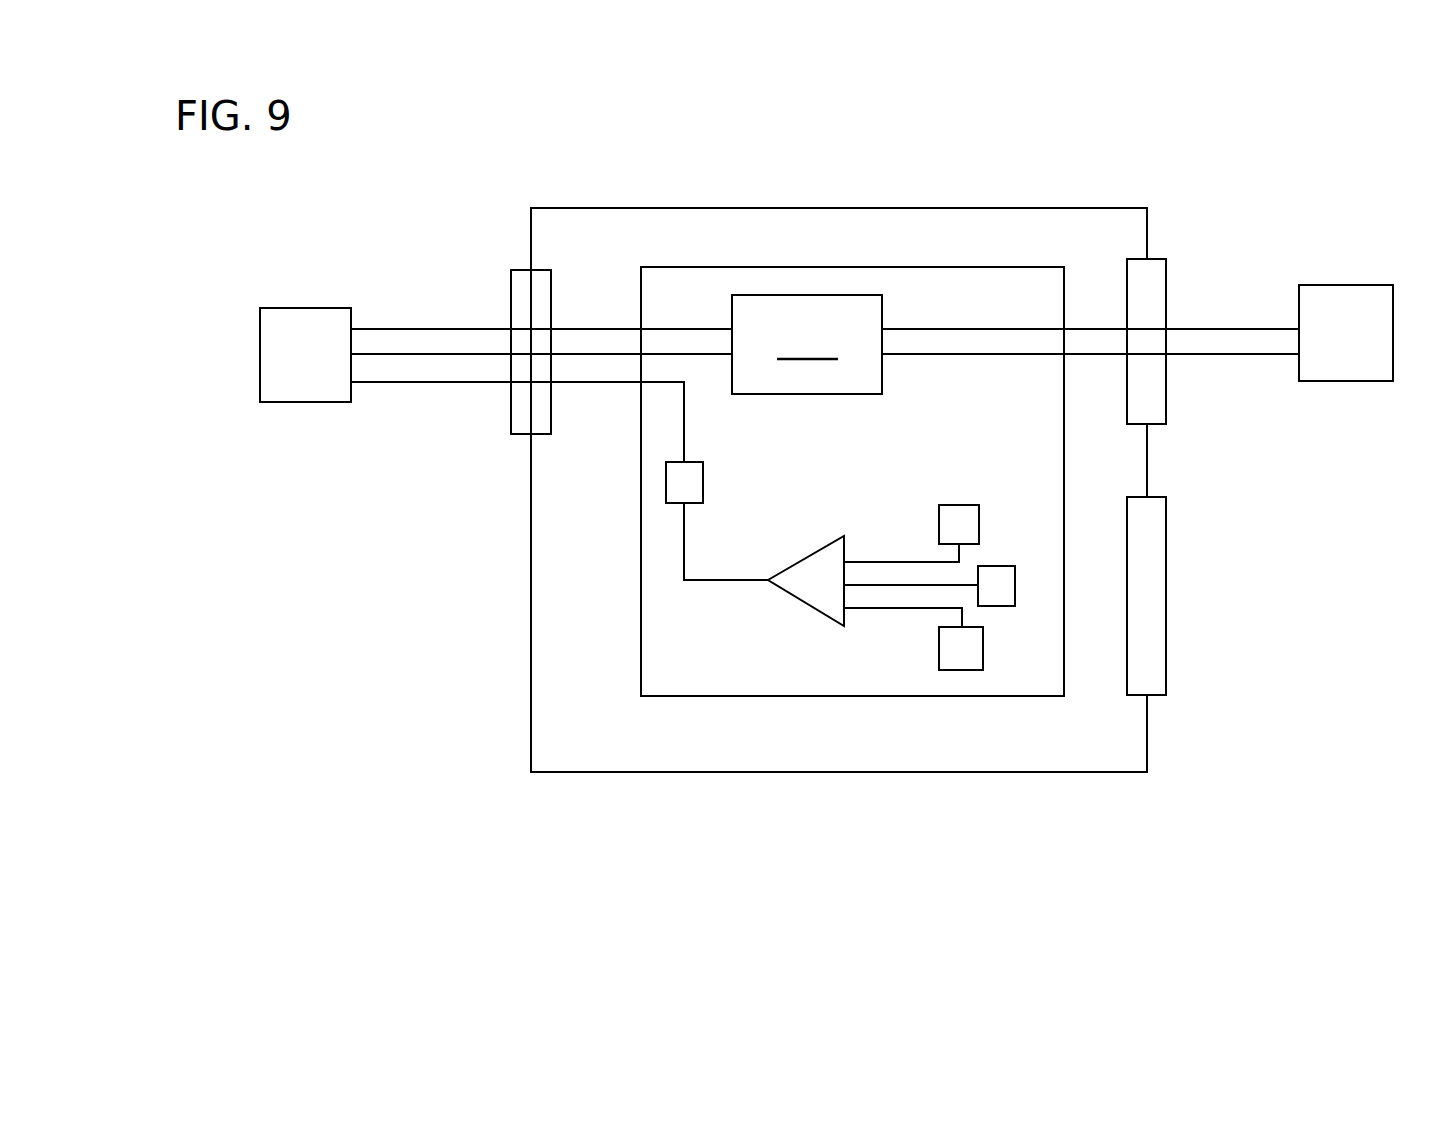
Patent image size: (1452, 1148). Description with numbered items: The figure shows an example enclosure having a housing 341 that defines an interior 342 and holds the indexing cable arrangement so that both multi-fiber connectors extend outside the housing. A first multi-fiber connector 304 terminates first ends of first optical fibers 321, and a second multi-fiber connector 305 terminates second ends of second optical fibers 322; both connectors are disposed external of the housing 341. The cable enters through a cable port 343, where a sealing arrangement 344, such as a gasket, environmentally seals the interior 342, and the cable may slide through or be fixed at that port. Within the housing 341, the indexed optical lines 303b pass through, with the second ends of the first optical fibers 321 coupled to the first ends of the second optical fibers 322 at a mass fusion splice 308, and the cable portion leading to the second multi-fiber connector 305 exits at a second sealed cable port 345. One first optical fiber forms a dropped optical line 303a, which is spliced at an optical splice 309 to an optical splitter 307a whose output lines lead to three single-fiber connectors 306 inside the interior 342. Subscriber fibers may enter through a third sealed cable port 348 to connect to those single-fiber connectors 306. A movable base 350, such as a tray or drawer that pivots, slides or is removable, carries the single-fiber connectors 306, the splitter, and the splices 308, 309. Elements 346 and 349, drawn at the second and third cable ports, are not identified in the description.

The housing 341 is at (1046, 773).
The interior 342 is at (617, 728).
The movable base 350 is at (715, 696).
The first multi-fiber connector 304 is at (288, 308).
The second multi-fiber connector 305 is at (1330, 283).
The first optical fibers 321 is at (411, 329).
The second optical fibers 322 is at (960, 329).
The dropped optical line 303a is at (684, 428).
The indexed optical lines 303b is at (654, 329).
The mass fusion splice 308 is at (807, 344).
The optical splice 309 is at (682, 485).
The optical splitter 307a is at (806, 583).
The single-fiber connectors 306 is at (970, 527).
The sealing arrangement 344 is at (520, 268).
The cable port 343 is at (530, 434).
The second connector 346 is at (1156, 257).
The second sealed cable port 345 is at (1148, 425).
The third connector 349 is at (1166, 653).
The third sealed cable port 348 is at (1147, 696).